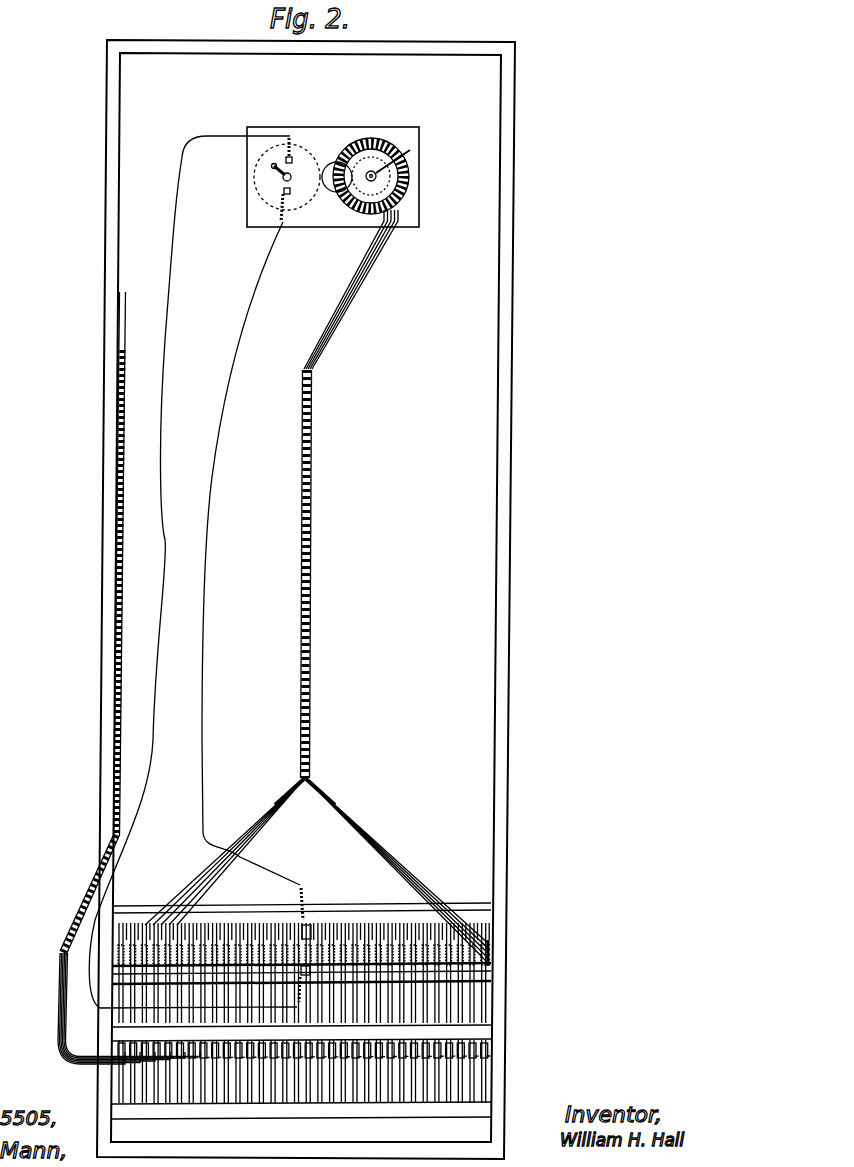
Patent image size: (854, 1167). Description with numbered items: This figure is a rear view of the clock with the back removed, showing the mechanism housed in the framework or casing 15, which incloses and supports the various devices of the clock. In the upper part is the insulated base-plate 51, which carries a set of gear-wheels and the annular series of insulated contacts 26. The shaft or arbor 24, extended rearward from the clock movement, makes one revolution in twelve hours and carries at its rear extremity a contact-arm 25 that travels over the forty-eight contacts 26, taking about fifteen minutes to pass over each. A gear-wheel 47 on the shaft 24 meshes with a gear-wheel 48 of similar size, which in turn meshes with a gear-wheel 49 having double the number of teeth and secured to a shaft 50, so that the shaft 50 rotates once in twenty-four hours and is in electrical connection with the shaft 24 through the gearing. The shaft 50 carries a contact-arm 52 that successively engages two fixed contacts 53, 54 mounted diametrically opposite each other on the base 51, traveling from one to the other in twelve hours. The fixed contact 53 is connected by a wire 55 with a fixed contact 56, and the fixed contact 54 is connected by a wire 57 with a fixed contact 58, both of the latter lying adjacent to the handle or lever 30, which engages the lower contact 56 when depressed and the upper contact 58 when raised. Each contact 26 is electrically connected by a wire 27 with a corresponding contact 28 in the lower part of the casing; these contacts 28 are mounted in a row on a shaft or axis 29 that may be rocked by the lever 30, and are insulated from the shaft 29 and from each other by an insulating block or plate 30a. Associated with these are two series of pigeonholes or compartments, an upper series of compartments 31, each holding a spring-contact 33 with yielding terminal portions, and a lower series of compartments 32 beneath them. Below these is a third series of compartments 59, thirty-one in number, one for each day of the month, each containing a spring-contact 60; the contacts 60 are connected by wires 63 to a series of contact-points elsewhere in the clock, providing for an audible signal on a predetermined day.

The framework or casing 15 is at (510, 473).
The shaft or arbor 24 is at (380, 177).
The contact-arm 25 is at (410, 150).
The insulated contacts 26 is at (390, 152).
The wire 27 is at (373, 255).
The contacts 28 is at (490, 963).
The shaft or axis 29 is at (490, 955).
The handle or lever 30 is at (412, 1097).
The insulating block or plate 30a is at (492, 952).
The upper series of compartments 31 is at (487, 943).
The lower series of compartments 32 is at (487, 1003).
The spring-contact 33 is at (475, 925).
The gear-wheel 47 is at (366, 195).
The gear-wheel 48 is at (330, 196).
The gear-wheel 49 is at (262, 203).
The shaft 50 is at (277, 180).
The base-plate 51 is at (419, 217).
The contact-arm 52 is at (278, 171).
The fixed contact 53 is at (293, 157).
The fixed contact 54 is at (290, 205).
The wire 55 is at (170, 303).
The fixed contact 56 is at (305, 994).
The wire 57 is at (212, 478).
The fixed contact 58 is at (311, 928).
The third series of compartments 59 is at (457, 1065).
The spring-contact 60 is at (470, 1047).
The wires 63 is at (114, 1008).